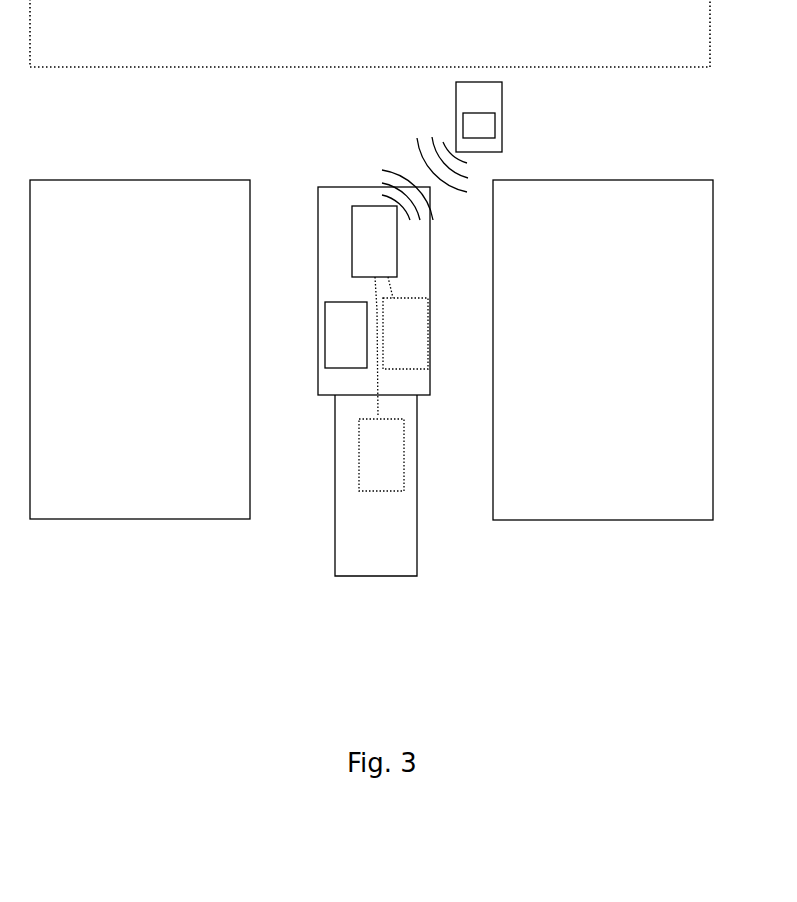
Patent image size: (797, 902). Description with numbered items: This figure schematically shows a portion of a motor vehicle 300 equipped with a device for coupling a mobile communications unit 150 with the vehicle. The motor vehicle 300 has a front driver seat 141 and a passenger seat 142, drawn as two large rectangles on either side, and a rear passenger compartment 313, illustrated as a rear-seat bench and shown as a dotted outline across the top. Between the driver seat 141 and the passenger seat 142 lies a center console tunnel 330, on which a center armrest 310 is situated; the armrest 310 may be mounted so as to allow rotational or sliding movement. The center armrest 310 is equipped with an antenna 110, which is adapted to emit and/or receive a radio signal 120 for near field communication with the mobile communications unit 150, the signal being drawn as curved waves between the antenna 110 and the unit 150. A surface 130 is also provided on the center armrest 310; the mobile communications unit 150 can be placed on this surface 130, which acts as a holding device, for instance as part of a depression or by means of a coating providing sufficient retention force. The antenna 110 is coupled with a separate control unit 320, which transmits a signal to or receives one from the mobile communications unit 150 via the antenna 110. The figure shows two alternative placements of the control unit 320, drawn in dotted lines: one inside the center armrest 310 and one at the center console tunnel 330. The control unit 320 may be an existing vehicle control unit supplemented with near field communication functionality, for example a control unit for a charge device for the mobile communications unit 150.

The antenna 110 is at (372, 203).
The radio signal 120 is at (435, 132).
The surface 130 is at (322, 345).
The front driver seat 141 is at (613, 528).
The passenger seat 142 is at (137, 525).
The mobile communications unit 150 is at (510, 100).
The motor vehicle 300 is at (698, 716).
The center armrest 310 is at (320, 253).
The rear passenger compartment 313 is at (635, 68).
The control unit 320 is at (430, 342).
The center console tunnel 330 is at (375, 582).